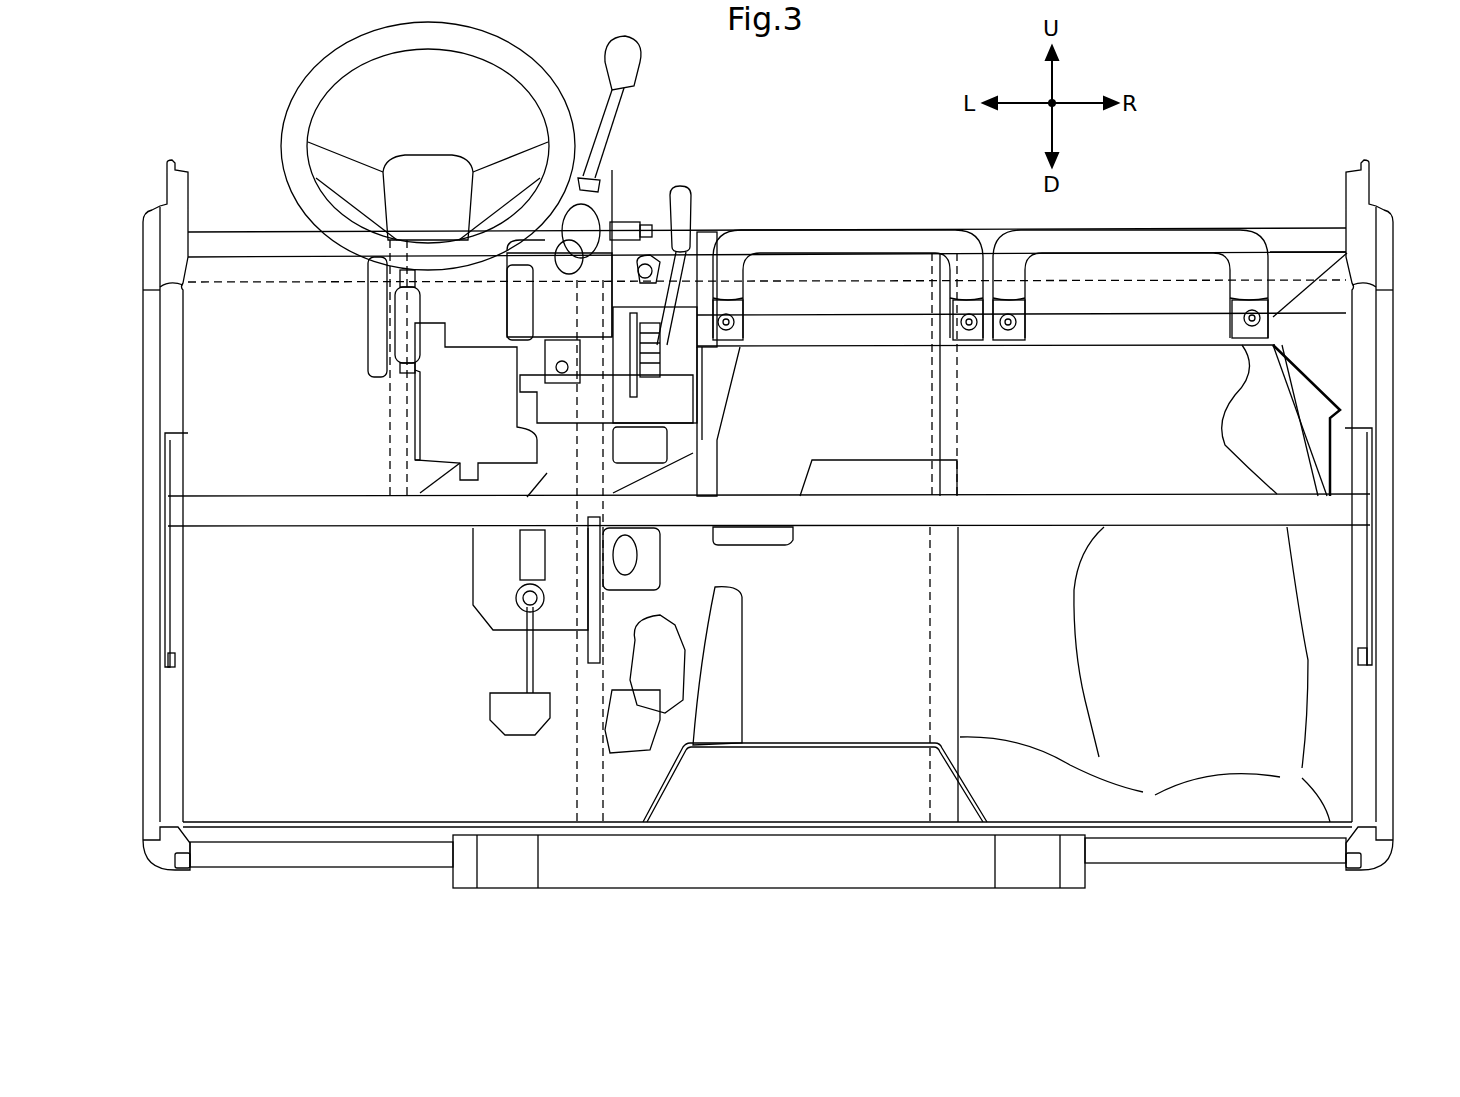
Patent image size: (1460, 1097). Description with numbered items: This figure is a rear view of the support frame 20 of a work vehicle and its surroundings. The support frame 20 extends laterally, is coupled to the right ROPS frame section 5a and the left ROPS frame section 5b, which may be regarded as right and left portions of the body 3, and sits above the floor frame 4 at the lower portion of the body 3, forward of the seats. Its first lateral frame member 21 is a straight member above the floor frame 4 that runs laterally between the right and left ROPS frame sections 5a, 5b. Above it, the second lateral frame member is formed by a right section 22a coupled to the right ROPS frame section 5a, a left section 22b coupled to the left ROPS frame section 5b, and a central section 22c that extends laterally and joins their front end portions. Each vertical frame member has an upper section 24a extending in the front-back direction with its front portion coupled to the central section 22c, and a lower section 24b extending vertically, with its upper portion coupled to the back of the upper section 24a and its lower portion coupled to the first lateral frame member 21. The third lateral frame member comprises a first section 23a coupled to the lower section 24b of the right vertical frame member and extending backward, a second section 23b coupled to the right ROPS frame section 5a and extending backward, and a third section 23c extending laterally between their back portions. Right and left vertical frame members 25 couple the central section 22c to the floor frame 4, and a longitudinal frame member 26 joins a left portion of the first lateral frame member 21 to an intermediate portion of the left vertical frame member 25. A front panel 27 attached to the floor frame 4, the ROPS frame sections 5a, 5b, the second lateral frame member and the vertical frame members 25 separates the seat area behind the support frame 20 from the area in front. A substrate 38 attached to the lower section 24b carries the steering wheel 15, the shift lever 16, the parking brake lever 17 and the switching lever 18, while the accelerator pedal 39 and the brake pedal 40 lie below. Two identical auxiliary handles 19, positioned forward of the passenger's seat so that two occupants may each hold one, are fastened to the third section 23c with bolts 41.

The body 3 is at (1012, 889).
The floor frame 4 is at (820, 743).
The right ROPS frame section 5a is at (1358, 587).
The left ROPS frame section 5b is at (180, 567).
The steering wheel 15 is at (318, 80).
The shift lever 16 is at (575, 222).
The parking brake lever 17 is at (678, 200).
The switching lever 18 is at (612, 45).
The auxiliary handle 19 is at (868, 235).
The support frame 20 is at (865, 155).
The first lateral frame member 21 is at (985, 500).
The right section 22a is at (1280, 236).
The left section 22b is at (262, 240).
The central section 22c is at (727, 238).
The first section 23a is at (722, 384).
The second section 23b is at (1307, 405).
The third section 23c is at (1115, 337).
The upper section 24a is at (707, 228).
The lower section 24b is at (800, 453).
The vertical frame member 25 is at (932, 575).
The longitudinal frame member 26 is at (592, 605).
The front panel 27 is at (265, 730).
The substrate 38 is at (368, 330).
The accelerator pedal 39 is at (632, 747).
The brake pedal 40 is at (503, 705).
The bolt 41 is at (735, 320).